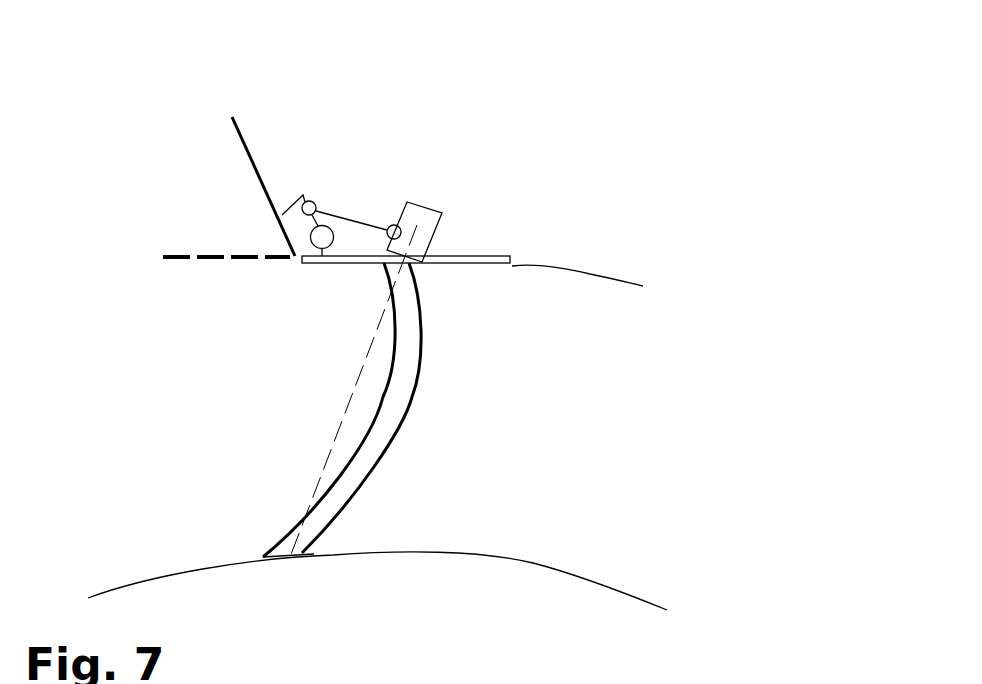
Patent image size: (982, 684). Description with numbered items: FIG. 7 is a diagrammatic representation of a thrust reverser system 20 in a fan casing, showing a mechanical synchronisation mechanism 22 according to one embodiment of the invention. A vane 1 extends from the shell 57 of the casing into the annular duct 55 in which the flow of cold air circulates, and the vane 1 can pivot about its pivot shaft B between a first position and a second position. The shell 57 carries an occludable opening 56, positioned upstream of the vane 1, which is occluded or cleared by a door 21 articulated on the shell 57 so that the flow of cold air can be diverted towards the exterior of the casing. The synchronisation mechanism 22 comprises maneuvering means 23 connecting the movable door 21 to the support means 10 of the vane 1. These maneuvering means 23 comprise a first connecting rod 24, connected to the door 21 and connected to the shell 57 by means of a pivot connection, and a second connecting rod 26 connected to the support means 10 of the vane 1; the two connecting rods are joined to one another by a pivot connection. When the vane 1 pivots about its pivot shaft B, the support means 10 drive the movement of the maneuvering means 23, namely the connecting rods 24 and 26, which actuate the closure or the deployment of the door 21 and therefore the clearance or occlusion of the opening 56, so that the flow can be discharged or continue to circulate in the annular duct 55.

The vane 1 is at (406, 373).
The support means 10 is at (426, 207).
The thrust reverser system 20 is at (622, 187).
The door 21 is at (237, 126).
The synchronisation mechanism 22 is at (397, 162).
The maneuvering means 23 is at (341, 211).
The first connecting rod 24 is at (303, 196).
The second connecting rod 26 is at (378, 226).
The annular duct 55 is at (489, 456).
The occludable opening 56 is at (212, 260).
The shell 57 is at (587, 272).
The pivot shaft B is at (345, 407).